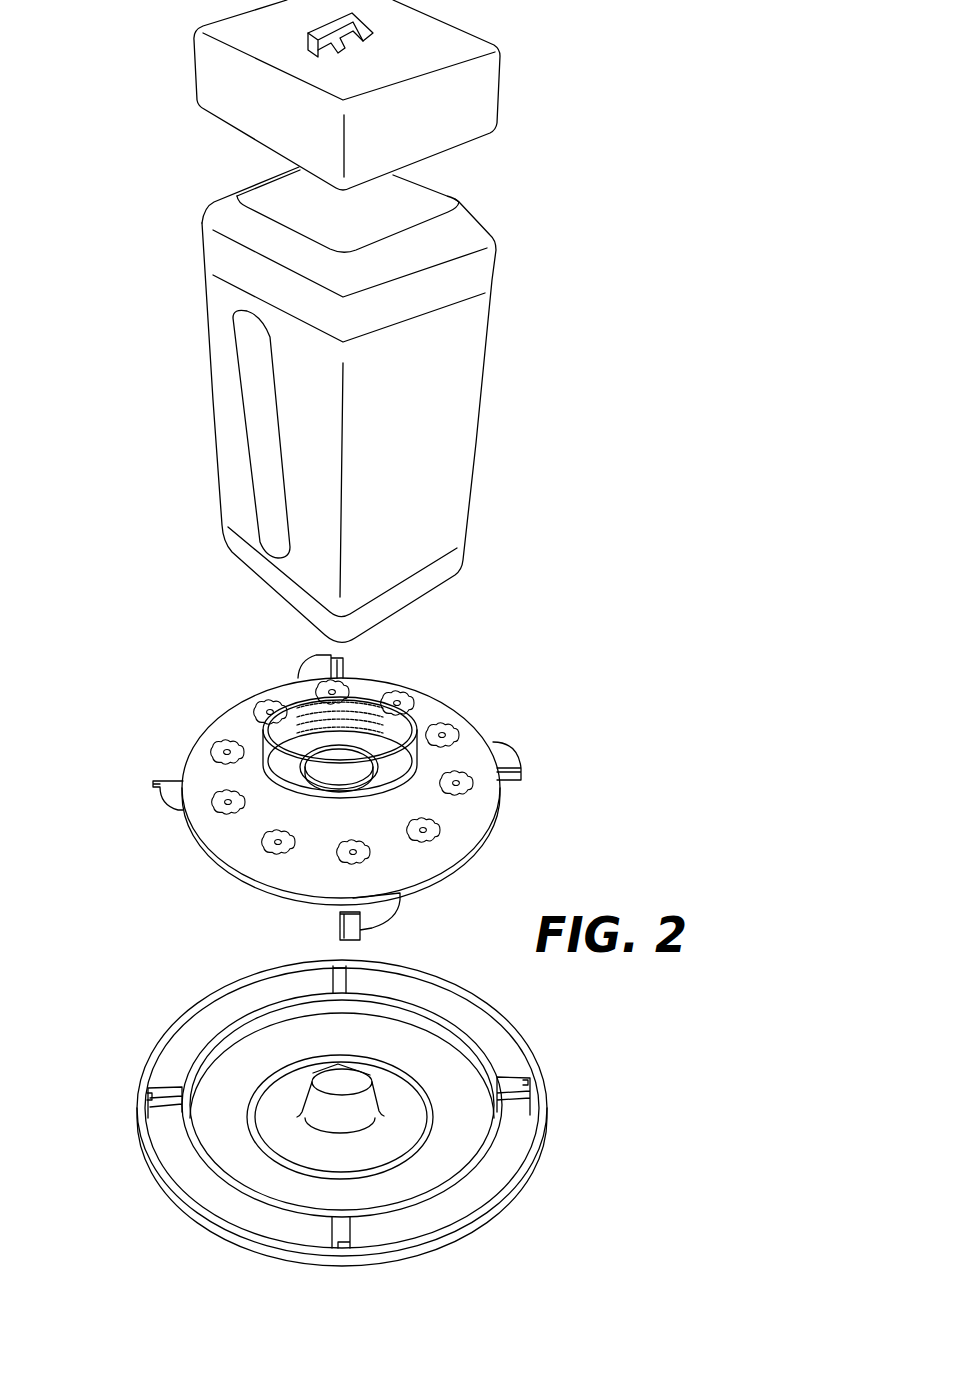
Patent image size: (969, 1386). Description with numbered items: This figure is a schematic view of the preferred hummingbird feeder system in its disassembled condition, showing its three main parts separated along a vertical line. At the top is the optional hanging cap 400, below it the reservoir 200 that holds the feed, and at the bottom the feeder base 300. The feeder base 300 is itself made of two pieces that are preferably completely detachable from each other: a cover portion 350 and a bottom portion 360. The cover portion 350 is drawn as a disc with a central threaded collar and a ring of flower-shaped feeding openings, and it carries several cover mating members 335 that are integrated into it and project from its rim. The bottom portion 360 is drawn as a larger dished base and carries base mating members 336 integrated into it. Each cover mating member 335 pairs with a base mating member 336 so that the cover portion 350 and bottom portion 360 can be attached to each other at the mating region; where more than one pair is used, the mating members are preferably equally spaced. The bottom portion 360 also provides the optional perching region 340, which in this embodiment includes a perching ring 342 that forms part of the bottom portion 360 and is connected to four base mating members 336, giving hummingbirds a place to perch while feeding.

The hanging cap 400 is at (500, 93).
The reservoir 200 is at (473, 445).
The feeder base 300 is at (560, 870).
The cover portion 350 is at (457, 713).
The cover mating member 335 is at (521, 770).
The perching region 340 is at (168, 1030).
The perching ring 342 is at (152, 1063).
The bottom portion 360 is at (477, 1040).
The base mating member 336 is at (528, 1082).